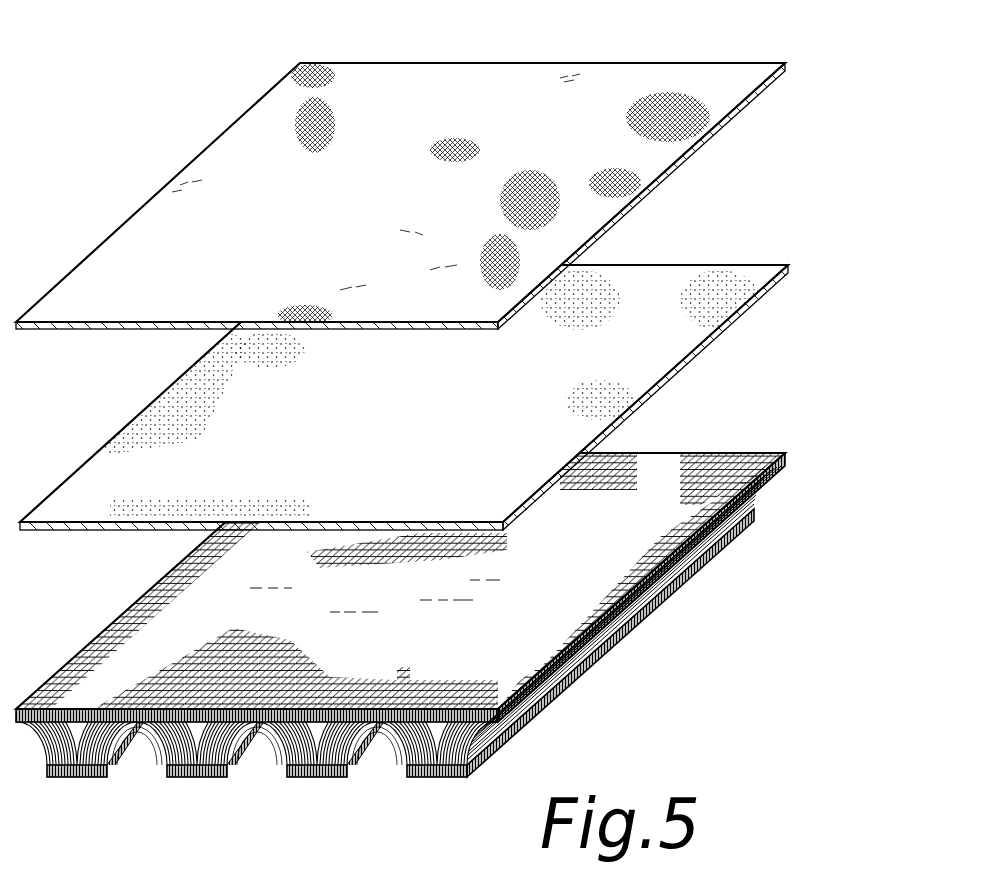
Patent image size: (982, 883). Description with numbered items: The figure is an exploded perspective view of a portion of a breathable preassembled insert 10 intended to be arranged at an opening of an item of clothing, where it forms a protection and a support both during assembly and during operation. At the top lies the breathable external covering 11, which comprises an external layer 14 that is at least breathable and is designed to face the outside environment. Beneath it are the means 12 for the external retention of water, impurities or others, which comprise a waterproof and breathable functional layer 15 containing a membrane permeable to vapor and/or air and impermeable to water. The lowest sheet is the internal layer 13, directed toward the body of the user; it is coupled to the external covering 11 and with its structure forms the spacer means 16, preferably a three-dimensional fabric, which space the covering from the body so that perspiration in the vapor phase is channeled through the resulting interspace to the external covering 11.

The breathable preassembled insert 10 is at (441, 396).
The breathable external covering 11 is at (449, 272).
The means for the external retention of water, impurities or others 12 is at (429, 397).
The internal layer 13 is at (414, 583).
The external layer 14 is at (529, 70).
The functional layer 15 is at (680, 349).
The spacer means 16 is at (616, 598).